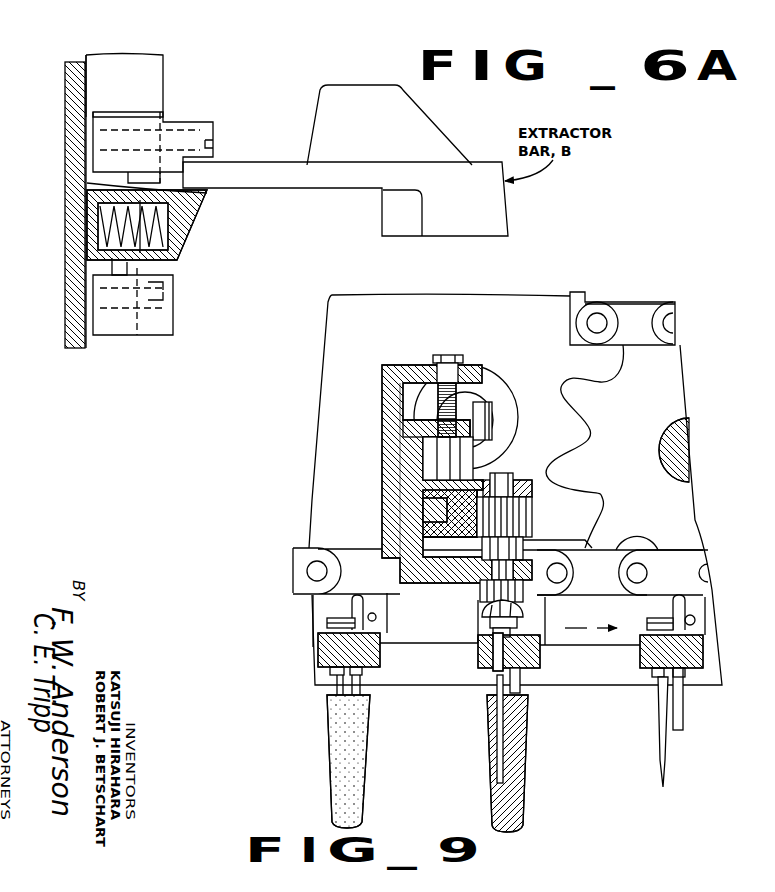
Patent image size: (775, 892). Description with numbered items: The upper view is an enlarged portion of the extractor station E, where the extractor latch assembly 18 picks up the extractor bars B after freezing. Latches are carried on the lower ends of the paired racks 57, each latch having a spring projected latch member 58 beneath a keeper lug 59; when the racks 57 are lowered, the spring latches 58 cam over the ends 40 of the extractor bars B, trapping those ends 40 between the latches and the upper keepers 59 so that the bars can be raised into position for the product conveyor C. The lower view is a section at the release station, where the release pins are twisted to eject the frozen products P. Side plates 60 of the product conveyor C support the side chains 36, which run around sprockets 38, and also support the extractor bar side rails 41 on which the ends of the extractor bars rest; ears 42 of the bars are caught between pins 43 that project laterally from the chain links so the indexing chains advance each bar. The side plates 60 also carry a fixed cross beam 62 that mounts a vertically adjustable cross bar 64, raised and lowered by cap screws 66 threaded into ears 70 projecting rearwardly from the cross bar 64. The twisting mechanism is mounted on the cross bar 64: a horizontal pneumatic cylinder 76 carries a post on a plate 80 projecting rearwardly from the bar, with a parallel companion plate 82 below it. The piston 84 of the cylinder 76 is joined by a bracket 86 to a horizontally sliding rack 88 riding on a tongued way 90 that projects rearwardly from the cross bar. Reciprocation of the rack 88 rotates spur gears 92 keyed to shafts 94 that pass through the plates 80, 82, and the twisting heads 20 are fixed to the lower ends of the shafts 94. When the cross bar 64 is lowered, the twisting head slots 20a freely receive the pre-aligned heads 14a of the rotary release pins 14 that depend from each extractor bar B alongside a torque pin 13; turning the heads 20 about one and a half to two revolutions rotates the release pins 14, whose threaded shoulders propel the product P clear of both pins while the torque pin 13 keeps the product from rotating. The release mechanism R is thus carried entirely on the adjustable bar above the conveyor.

In FIG. 6A, the paired racks 57 is at (150, 68).
In FIG. 6A, the extractor station E is at (200, 102).
In FIG. 6A, the keeper lug 59 is at (213, 150).
In FIG. 6A, the ends of the extractor bars 40 is at (227, 170).
In FIG. 6A, the ears of the extractor bars 42 is at (380, 133).
In FIG. 9, the ears of the extractor bars 42 is at (357, 595).
In FIG. 6A, the extractor latch assembly 18 is at (210, 217).
In FIG. 6A, the spring projected latch member 58 is at (170, 243).
In FIG. 9, the side plates 60 is at (537, 335).
In FIG. 9, the sprocket pair 38 is at (660, 411).
In FIG. 9, the side chains 36 is at (630, 307).
In FIG. 9, the product conveyor C is at (290, 542).
In FIG. 9, the ratchet assembly R is at (357, 385).
In FIG. 9, the cross beam 62 is at (389, 365).
In FIG. 9, the cap screws 66 is at (448, 355).
In FIG. 9, the horizontal pneumatic cylinder 76 is at (497, 383).
In FIG. 9, the piston 84 is at (480, 402).
In FIG. 9, the bracket 86 is at (478, 447).
In FIG. 9, the ears 70 is at (413, 423).
In FIG. 9, the vertically adjustable cross bar 64 is at (407, 465).
In FIG. 9, the shafts 94 is at (508, 475).
In FIG. 9, the plate 80 is at (532, 492).
In FIG. 9, the tongued way 90 is at (427, 512).
In FIG. 9, the spur gears 92 is at (522, 528).
In FIG. 9, the horizontally sliding rack 88 is at (443, 528).
In FIG. 9, the companion plate 82 is at (572, 580).
In FIG. 9, the twisting heads 20 is at (540, 608).
In FIG. 9, the twisting head slots 20a is at (484, 620).
In FIG. 9, the pins 43 is at (343, 612).
In FIG. 9, the heads of the release pins 14a is at (484, 613).
In FIG. 9, the extractor bar B is at (477, 659).
In FIG. 9, the torque pin 13 is at (521, 677).
In FIG. 9, the rotary release pin 14 is at (494, 690).
In FIG. 9, the side rails 41 is at (615, 684).
In FIG. 9, the frozen products P is at (485, 753).